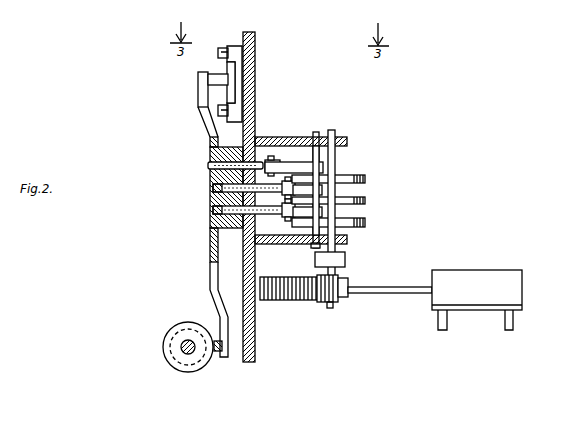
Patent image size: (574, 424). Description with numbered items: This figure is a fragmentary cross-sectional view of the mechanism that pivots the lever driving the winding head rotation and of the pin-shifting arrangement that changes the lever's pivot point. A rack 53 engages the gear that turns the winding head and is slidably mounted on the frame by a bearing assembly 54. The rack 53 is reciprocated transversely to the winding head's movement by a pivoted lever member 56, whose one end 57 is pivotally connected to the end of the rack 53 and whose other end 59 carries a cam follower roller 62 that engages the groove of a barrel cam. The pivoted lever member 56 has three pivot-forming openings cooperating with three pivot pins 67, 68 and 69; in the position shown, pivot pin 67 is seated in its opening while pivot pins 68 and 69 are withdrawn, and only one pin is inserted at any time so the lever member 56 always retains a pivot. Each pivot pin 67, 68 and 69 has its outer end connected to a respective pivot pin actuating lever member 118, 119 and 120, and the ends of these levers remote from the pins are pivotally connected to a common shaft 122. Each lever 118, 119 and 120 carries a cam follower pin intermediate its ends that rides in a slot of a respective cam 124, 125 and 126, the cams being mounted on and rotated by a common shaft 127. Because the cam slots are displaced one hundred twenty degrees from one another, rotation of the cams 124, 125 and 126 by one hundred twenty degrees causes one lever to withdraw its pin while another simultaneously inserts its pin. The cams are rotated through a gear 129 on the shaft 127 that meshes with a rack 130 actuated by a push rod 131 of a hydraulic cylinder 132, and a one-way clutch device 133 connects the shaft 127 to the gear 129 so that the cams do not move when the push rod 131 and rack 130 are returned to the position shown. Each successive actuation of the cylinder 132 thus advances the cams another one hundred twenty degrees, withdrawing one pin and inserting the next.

The rack 53 is at (227, 73).
The bearing assembly 54 is at (231, 46).
The pivoted lever member 56 is at (210, 258).
The end of pivoted lever member 57 is at (198, 105).
The other end of pivoted lever member 59 is at (220, 328).
The cam follower roller 62 is at (223, 352).
The pivot pin 67 is at (208, 165).
The pivot pin 68 is at (213, 187).
The pivot pin 69 is at (213, 208).
The pivot pin actuating lever member 118 is at (293, 165).
The pivot pin actuating lever member 119 is at (340, 191).
The pivot pin actuating lever member 120 is at (340, 213).
The common shaft 122 is at (335, 151).
The cam 124 is at (368, 180).
The cam 125 is at (368, 200).
The cam 126 is at (368, 225).
The common shaft 127 is at (338, 163).
The gear 129 is at (322, 305).
The rack 130 is at (292, 302).
The push rod 131 is at (404, 294).
The hydraulic cylinder 132 is at (470, 270).
The one-way clutch device 133 is at (345, 261).